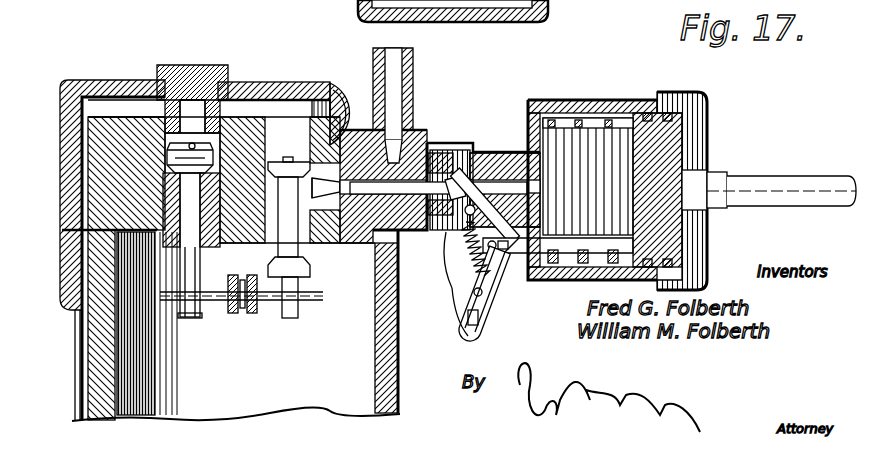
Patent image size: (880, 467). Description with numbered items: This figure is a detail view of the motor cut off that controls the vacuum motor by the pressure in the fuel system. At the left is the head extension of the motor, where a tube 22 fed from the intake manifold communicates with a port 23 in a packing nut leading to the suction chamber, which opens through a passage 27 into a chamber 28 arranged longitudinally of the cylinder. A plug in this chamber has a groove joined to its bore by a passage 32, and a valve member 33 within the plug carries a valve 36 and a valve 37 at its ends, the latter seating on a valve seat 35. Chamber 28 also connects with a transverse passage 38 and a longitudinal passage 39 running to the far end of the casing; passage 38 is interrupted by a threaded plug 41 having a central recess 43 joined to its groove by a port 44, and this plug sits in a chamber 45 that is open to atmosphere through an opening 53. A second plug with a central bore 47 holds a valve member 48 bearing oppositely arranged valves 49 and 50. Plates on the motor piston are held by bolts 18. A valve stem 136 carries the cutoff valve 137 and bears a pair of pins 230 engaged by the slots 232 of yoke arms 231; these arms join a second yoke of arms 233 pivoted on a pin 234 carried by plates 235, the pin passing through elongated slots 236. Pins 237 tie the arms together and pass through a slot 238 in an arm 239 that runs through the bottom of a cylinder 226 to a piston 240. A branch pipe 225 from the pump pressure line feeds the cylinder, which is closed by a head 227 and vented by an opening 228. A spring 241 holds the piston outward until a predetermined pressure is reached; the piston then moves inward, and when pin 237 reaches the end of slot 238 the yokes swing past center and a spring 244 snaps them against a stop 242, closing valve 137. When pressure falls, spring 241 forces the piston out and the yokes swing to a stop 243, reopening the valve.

The bolts 18 is at (455, 119).
The tube 22 is at (392, 104).
The port or passage 23 is at (390, 162).
The passage 27 is at (347, 240).
The chamber 28 is at (336, 112).
The passage 32 is at (312, 200).
The valve member 33 is at (296, 200).
The valve seat 35 is at (266, 255).
The valve 36 is at (292, 163).
The valve 37 is at (309, 268).
The transverse passage 38 is at (284, 107).
The longitudinal passage 39 is at (85, 388).
The threaded plug 41 is at (184, 68).
The central recess 43 is at (193, 104).
The port 44 is at (222, 107).
The chamber 45 is at (212, 148).
The central bore 47 is at (272, 248).
The valve member 48 is at (196, 278).
The valve 49 is at (207, 157).
The valve 50 is at (163, 167).
The opening 53 is at (180, 150).
The valve stem 136 is at (483, 183).
The valve 137 is at (341, 143).
The branch pipe 225 is at (765, 178).
The cylinder 226 is at (595, 100).
The head 227 is at (706, 122).
The opening 228 is at (505, 183).
The pins 230 is at (447, 135).
The arms 231 is at (453, 180).
The slots 232 is at (441, 150).
The arms 233 is at (510, 302).
The pin 234 is at (492, 300).
The plates 235 is at (453, 323).
The elongated slots 236 is at (462, 325).
The pins 237 is at (513, 272).
The slot 238 is at (515, 255).
The arm 239 is at (558, 246).
The piston 240 is at (646, 114).
The spring 241 is at (562, 116).
The stop 242 is at (450, 283).
The stop 243 is at (507, 286).
The spring 244 is at (486, 190).